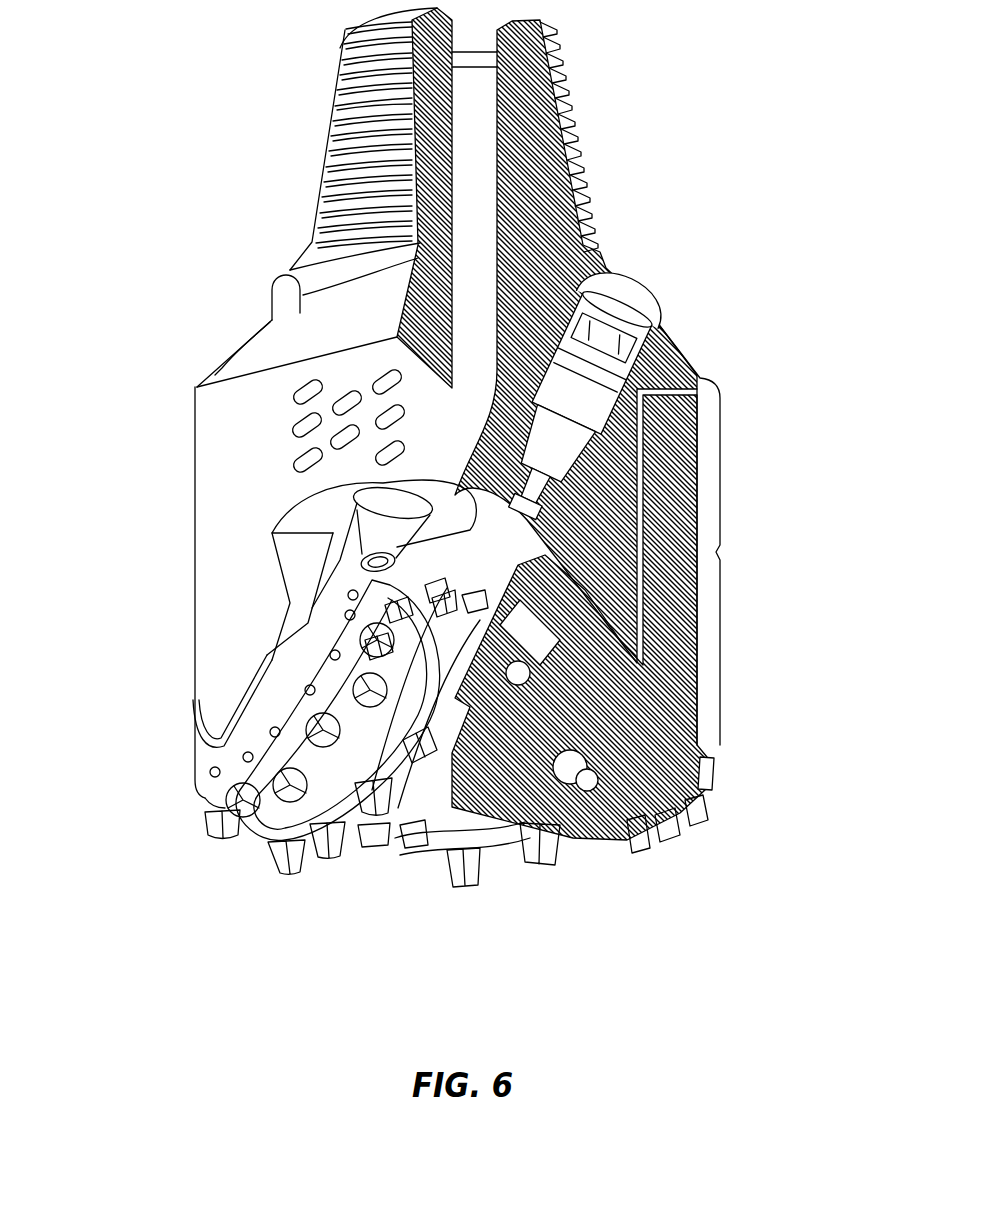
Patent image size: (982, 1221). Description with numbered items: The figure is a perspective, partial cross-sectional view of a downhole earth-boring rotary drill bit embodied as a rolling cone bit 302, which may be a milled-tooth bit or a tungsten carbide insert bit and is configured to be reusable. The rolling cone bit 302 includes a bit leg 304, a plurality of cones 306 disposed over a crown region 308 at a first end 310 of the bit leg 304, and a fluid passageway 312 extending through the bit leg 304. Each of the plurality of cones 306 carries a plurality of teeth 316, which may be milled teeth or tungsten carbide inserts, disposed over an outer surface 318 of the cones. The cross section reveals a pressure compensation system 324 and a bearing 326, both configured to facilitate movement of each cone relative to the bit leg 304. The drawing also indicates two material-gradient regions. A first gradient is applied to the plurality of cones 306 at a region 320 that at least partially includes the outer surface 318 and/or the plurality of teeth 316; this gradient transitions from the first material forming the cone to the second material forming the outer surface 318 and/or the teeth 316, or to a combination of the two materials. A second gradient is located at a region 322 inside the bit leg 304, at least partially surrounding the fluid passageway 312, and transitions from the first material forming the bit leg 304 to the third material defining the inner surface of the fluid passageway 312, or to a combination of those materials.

The rolling cone bit 302 is at (163, 148).
The bit leg 304 is at (243, 605).
The plurality of cones 306 is at (484, 912).
The crown region 308 is at (345, 907).
The first end 310 is at (164, 829).
The fluid passageway 312 is at (390, 520).
The plurality of teeth 316 is at (312, 712).
The outer surface 318 is at (348, 773).
The region 320 is at (520, 633).
The region 322 is at (288, 523).
The pressure compensation system 324 is at (590, 428).
The bearing 326 is at (627, 790).